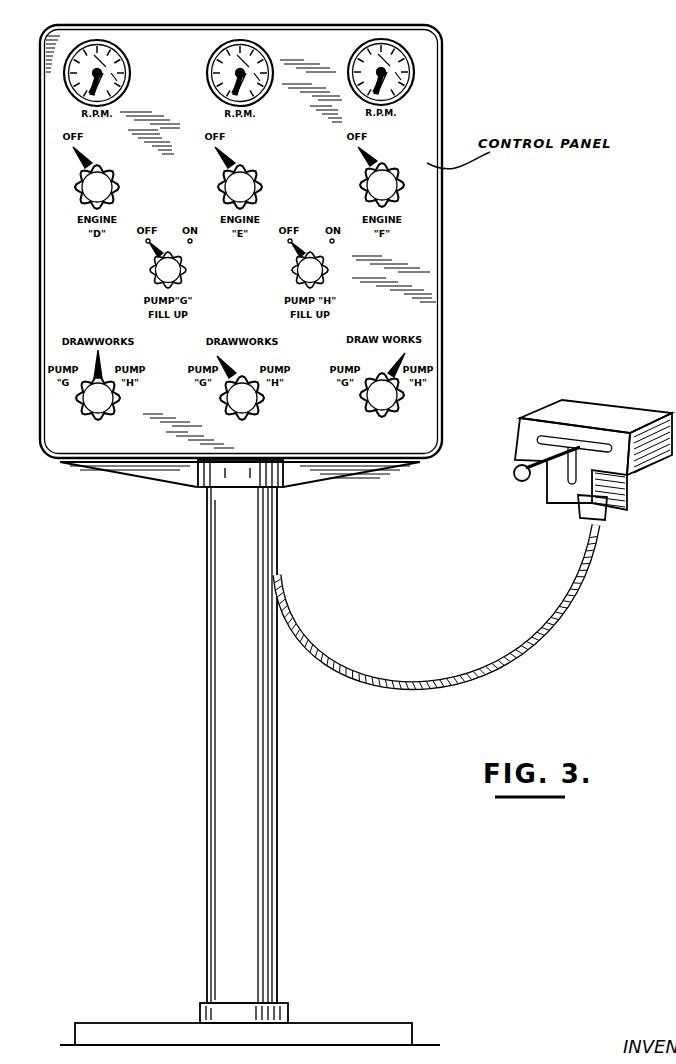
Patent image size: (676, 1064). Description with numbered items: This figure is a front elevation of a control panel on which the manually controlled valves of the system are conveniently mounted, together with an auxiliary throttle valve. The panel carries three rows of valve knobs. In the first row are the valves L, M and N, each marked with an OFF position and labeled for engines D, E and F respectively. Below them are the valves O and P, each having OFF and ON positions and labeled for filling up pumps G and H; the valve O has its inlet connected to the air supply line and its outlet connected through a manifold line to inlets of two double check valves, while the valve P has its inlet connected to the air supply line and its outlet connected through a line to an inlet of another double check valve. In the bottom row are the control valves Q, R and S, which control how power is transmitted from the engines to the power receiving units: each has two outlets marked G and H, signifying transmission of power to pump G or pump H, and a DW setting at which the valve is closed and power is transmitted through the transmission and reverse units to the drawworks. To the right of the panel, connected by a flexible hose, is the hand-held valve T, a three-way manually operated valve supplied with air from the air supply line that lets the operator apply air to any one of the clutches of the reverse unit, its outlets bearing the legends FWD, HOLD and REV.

The manually controlled valve L is at (96, 178).
The manually controlled valve M is at (238, 178).
The manually controlled valve N is at (381, 177).
The valve O is at (167, 265).
The valve P is at (309, 265).
The control valve Q is at (98, 385).
The control valve R is at (240, 388).
The control valve S is at (382, 385).
The three-way manually operated valve T is at (612, 410).